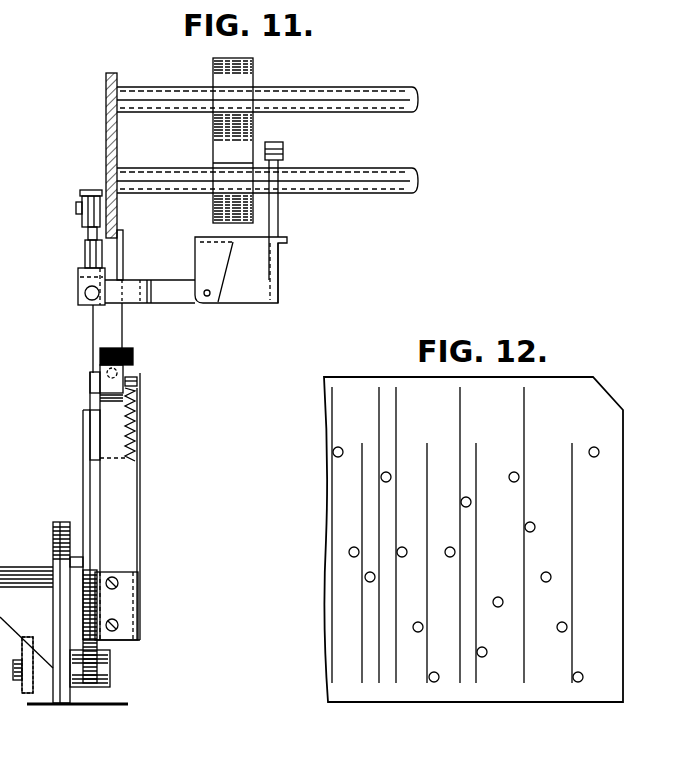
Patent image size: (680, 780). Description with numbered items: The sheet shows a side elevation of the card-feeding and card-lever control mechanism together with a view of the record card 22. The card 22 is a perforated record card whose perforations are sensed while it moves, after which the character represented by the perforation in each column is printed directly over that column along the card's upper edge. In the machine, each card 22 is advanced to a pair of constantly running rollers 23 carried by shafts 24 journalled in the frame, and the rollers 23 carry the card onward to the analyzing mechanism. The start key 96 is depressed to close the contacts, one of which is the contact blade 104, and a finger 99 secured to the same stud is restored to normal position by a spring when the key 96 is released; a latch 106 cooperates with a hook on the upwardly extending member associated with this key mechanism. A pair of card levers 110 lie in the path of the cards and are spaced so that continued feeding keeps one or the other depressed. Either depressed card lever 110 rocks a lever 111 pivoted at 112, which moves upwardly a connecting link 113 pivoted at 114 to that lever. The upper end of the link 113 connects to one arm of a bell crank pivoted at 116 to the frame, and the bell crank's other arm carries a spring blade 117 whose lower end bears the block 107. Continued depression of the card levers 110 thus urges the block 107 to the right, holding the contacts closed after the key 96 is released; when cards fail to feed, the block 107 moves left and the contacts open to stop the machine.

In FIG. 12, the card 22 is at (612, 421).
In FIG. 11, the rollers 23 is at (255, 68).
In FIG. 11, the shafts 24 is at (348, 94).
In FIG. 11, the start key 96 is at (23, 688).
In FIG. 11, the finger 99 is at (100, 372).
In FIG. 11, the contact blade 104 is at (115, 508).
In FIG. 11, the latch 106 is at (138, 380).
In FIG. 11, the block 107 is at (134, 358).
In FIG. 11, the card levers 110 is at (284, 148).
In FIG. 11, the lever 111 is at (263, 298).
In FIG. 11, the pivot 112 is at (209, 297).
In FIG. 11, the connecting link 113 is at (85, 252).
In FIG. 11, the pivot 114 is at (80, 295).
In FIG. 11, the pivot 116 is at (80, 194).
In FIG. 11, the spring blade 117 is at (110, 324).